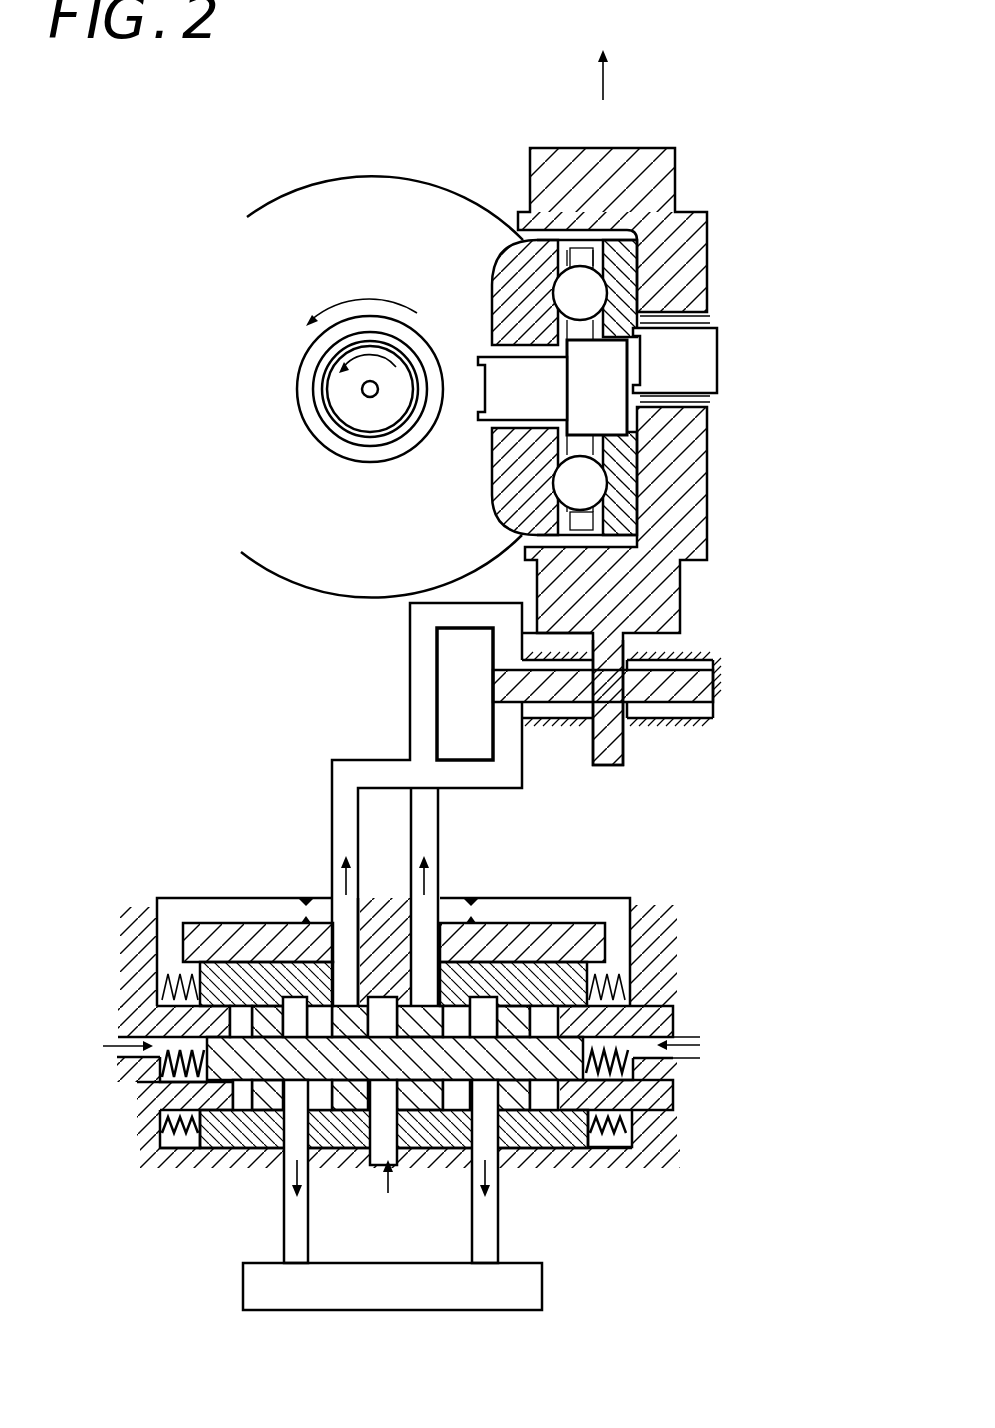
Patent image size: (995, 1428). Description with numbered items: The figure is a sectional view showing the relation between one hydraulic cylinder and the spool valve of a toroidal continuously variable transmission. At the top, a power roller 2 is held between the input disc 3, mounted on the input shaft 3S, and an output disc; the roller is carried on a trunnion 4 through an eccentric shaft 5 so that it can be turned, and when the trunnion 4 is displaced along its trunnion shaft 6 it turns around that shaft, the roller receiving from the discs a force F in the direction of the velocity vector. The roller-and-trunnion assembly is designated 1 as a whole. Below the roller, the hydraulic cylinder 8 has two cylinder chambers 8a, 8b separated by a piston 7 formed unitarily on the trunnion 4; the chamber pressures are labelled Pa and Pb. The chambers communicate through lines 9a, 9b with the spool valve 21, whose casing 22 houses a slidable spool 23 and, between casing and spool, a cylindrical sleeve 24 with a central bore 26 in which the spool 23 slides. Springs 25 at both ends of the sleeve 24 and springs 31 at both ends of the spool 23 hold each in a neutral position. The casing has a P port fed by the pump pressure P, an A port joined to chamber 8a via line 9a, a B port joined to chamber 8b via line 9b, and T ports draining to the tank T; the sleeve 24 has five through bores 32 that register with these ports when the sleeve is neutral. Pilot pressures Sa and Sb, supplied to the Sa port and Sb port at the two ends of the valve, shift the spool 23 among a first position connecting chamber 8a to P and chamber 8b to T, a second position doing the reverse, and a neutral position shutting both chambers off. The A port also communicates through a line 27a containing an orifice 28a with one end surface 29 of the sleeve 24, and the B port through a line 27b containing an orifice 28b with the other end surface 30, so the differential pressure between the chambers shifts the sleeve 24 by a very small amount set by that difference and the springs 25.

The spindle head 1 is at (611, 400).
The power roller 2 is at (522, 292).
The input disc 3 is at (306, 242).
The input shaft 3S is at (363, 416).
The trunnion 4 is at (680, 285).
The eccentric shaft 5 is at (690, 358).
The trunnion shaft 6 is at (607, 752).
The piston 7 is at (705, 690).
The hydraulic cylinder 8 is at (647, 689).
The cylinder chamber 8a is at (684, 720).
The cylinder chamber 8b is at (693, 656).
The line 9a is at (342, 814).
The line 9b is at (428, 819).
The spool valve 21 is at (673, 920).
The casing 22 is at (610, 1148).
The spool 23 is at (247, 1063).
The cylindrical sleeve 24 is at (237, 960).
The springs 25 is at (172, 996).
The central bore 26 is at (252, 1100).
The line 27a is at (192, 910).
The line 27b is at (597, 910).
The orifice 28a is at (305, 896).
The orifice 28b is at (478, 903).
The end surface 29 is at (198, 972).
The end surface 30 is at (590, 968).
The springs 31 is at (160, 1077).
The through bores 32 is at (300, 995).
The feed force F is at (613, 70).
The pressure chamber a Pa is at (510, 753).
The pressure chamber b Pb is at (425, 688).
The A port A is at (349, 872).
The B port B is at (423, 882).
The pilot pressure Sa is at (662, 1047).
The pilot pressure Sb is at (107, 1045).
The pump pressure P is at (390, 1199).
The tank T is at (418, 1310).